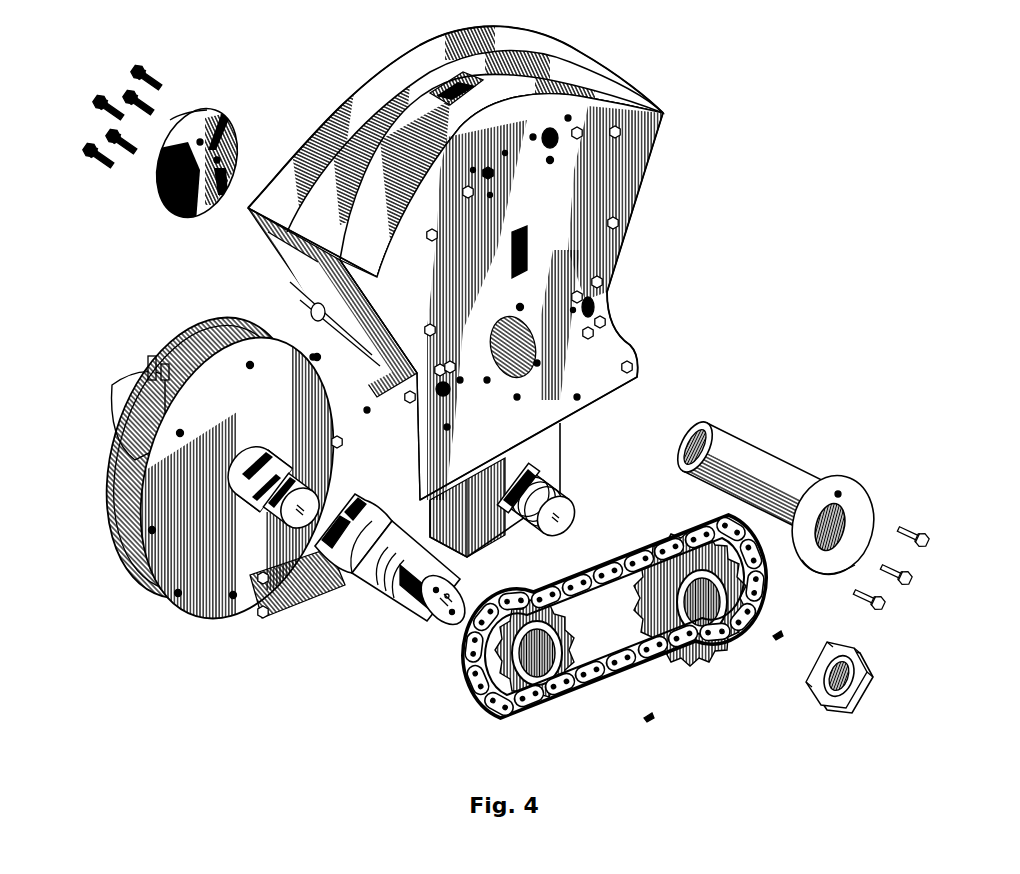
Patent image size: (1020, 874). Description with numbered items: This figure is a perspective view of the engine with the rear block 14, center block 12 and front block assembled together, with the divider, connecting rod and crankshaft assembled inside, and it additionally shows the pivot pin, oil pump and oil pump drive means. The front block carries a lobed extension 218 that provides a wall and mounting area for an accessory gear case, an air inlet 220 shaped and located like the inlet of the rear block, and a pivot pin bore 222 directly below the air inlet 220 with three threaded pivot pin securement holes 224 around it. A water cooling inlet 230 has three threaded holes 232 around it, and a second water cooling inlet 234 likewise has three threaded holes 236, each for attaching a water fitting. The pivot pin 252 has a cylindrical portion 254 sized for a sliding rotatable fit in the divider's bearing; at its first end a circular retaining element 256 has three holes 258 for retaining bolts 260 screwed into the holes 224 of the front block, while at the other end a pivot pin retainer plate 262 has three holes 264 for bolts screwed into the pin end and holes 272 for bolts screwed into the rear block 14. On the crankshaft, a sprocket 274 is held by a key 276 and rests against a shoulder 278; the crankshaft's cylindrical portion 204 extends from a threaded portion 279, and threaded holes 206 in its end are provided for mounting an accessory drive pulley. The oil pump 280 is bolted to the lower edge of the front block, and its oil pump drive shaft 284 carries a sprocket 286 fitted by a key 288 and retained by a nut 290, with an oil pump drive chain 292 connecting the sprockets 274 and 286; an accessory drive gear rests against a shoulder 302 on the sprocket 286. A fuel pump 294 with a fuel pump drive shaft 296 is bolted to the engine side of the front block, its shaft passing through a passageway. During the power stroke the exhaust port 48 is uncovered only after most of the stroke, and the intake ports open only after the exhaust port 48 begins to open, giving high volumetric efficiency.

The center block 12 is at (572, 67).
The rear block 14 is at (393, 57).
The exhaust port 48 is at (438, 106).
The cylindrical portion 204 is at (418, 626).
The threaded holes 206 is at (456, 636).
The lobed extension 218 is at (236, 431).
The air inlet 220 is at (528, 243).
The pivot pin bore 222 is at (500, 333).
The pivot pin securement holes 224 is at (518, 305).
The water cooling inlet 230 is at (448, 395).
The threaded holes 232 is at (433, 336).
The water cooling inlet 234 is at (595, 307).
The threaded holes 236 is at (573, 296).
The pivot pin 252 is at (787, 486).
The cylindrical portion 254 is at (780, 458).
The circular retaining element 256 is at (842, 521).
The holes 258 is at (822, 553).
The retaining bolts 260 is at (924, 534).
The pivot pin retainer plate 262 is at (189, 163).
The holes 264 is at (202, 140).
The holes 272 is at (212, 122).
The sprocket 274 is at (558, 616).
The key 276 is at (645, 725).
The shoulder 278 is at (346, 522).
The threaded portion 279 is at (380, 612).
The oil pump 280 is at (560, 432).
The oil pump drive shaft 284 is at (572, 515).
The sprocket 286 is at (640, 644).
The key 288 is at (776, 641).
The nut 290 is at (826, 712).
The oil pump drive chain 292 is at (582, 712).
The fuel pump 294 is at (136, 387).
The fuel pump drive shaft 296 is at (264, 510).
The shoulder 302 is at (728, 605).